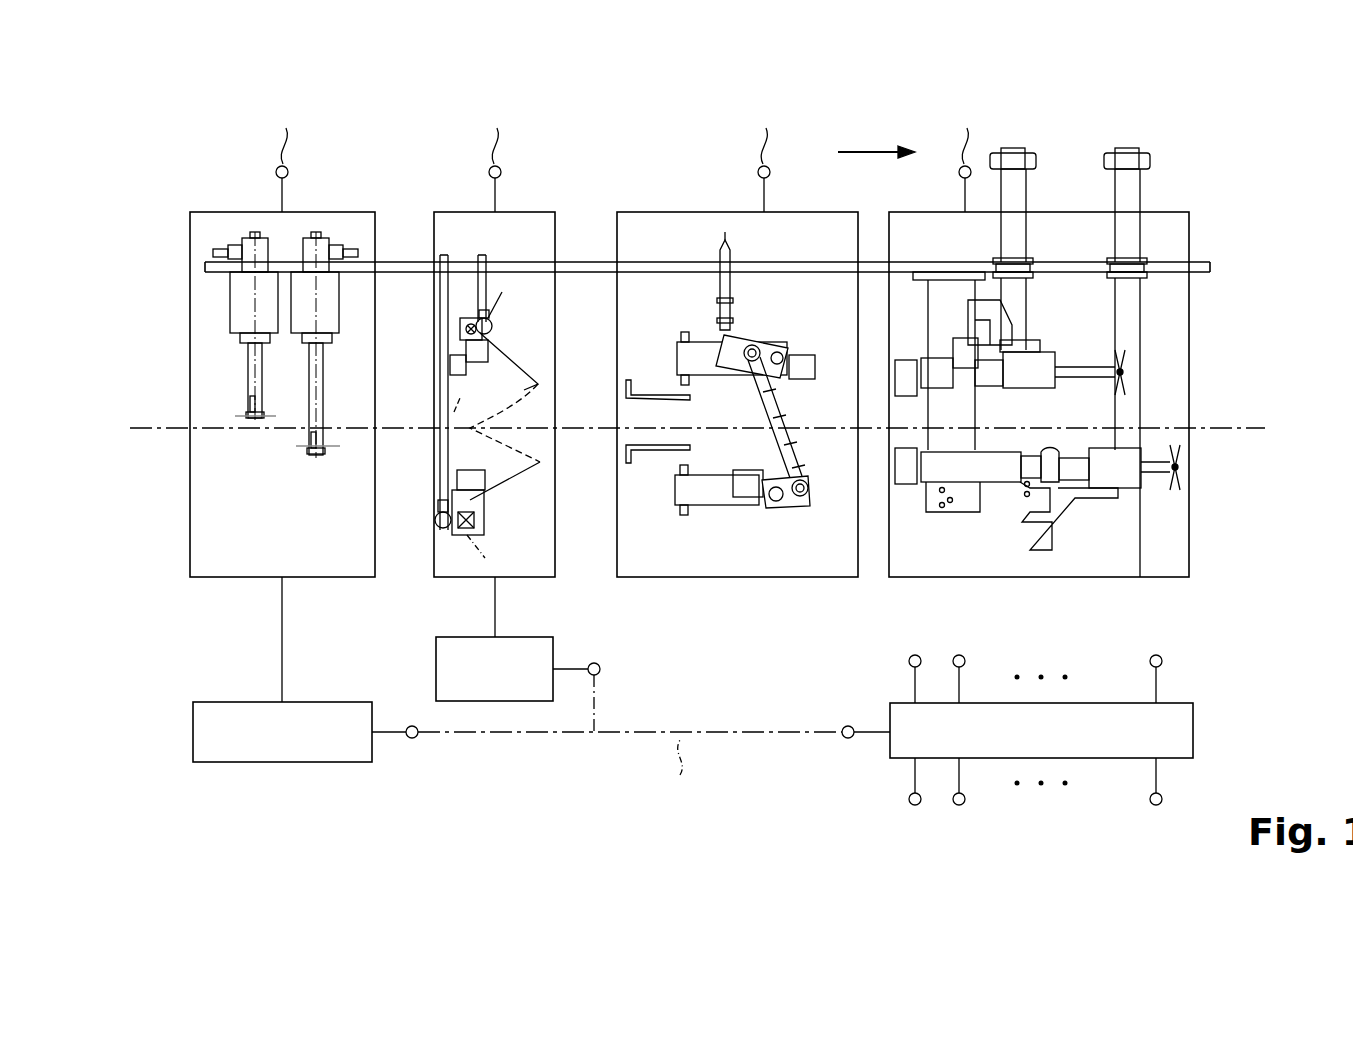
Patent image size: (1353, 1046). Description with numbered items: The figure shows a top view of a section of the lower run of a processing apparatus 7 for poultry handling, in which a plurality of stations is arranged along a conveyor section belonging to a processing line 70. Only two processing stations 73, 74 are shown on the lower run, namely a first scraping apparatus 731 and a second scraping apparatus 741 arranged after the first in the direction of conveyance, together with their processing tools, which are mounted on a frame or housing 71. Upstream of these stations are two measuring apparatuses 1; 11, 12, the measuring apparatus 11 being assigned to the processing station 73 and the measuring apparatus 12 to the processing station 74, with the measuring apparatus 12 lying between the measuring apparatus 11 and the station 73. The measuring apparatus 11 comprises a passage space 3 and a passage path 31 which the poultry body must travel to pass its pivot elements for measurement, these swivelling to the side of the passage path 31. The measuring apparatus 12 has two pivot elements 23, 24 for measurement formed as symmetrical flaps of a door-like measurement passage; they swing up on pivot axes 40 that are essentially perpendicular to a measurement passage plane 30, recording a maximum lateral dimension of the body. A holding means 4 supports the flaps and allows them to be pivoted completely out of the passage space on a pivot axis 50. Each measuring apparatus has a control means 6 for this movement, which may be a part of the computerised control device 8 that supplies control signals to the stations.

The processing apparatus 7 is at (122, 148).
The measuring apparatus 1 is at (395, 357).
The measuring apparatus 11 is at (348, 212).
The measuring apparatus 12 is at (532, 212).
The passage space 3 is at (284, 420).
The holding means 4 is at (248, 346).
The pivot axes for measurement 40 is at (250, 370).
The pivot axis to move out 50 is at (250, 408).
The pivot element for measurement 23 is at (496, 352).
The pivot element for measurement 24 is at (498, 498).
The measurement passage plane 30 is at (536, 382).
The passage path 31 is at (147, 432).
The processing station 73 is at (676, 212).
The first scraping apparatus 731 is at (720, 373).
The processing station 74 is at (1177, 212).
The second scraping apparatus 741 is at (1037, 362).
The frame or housing 71 is at (1196, 270).
The processing line 70 is at (1252, 426).
The control means 6 is at (192, 732).
The control device 8 is at (1193, 730).